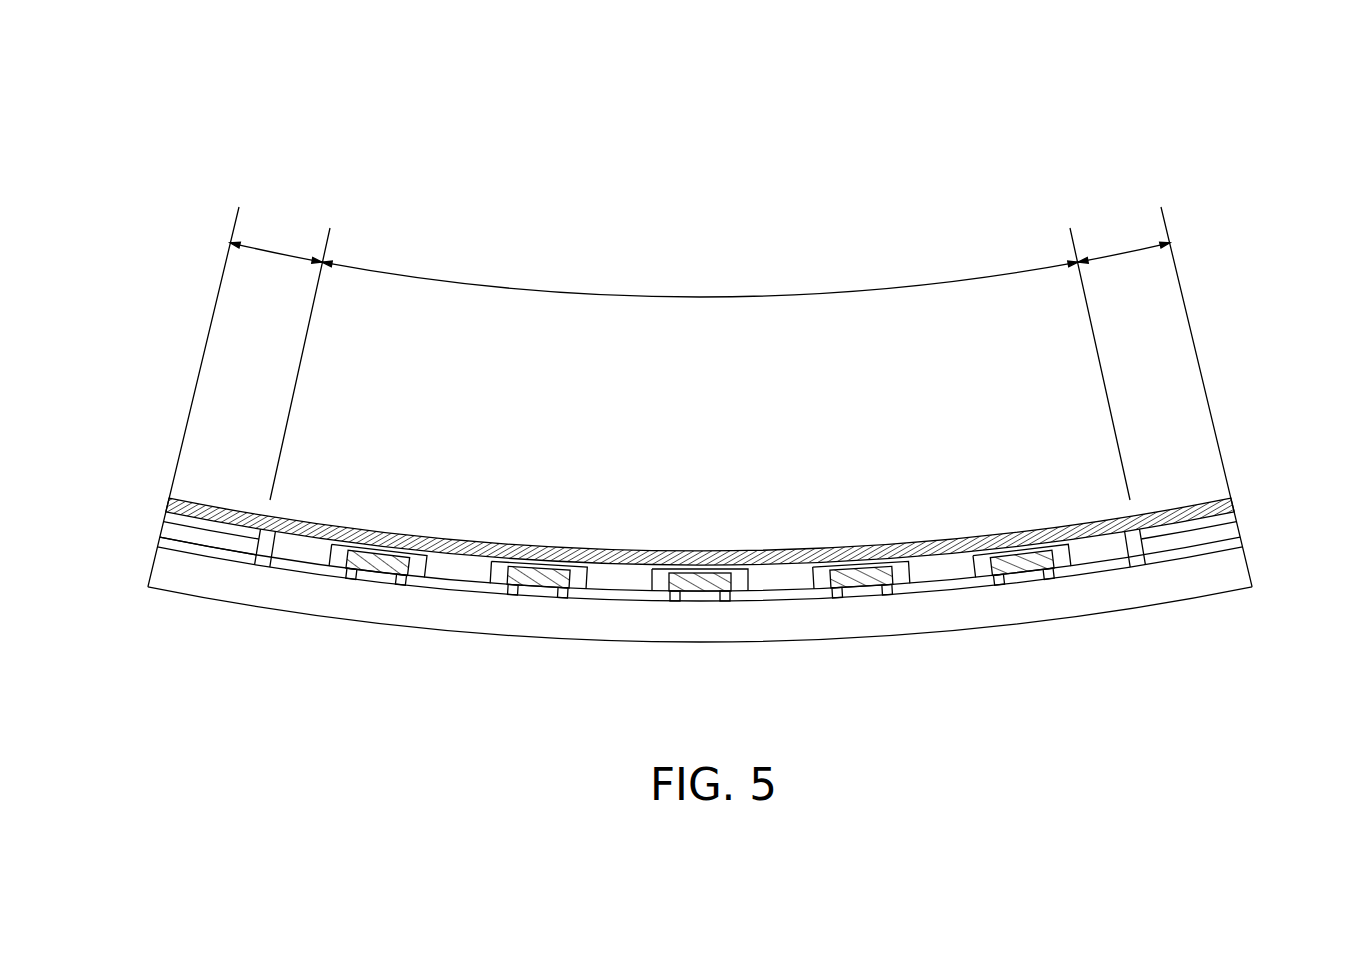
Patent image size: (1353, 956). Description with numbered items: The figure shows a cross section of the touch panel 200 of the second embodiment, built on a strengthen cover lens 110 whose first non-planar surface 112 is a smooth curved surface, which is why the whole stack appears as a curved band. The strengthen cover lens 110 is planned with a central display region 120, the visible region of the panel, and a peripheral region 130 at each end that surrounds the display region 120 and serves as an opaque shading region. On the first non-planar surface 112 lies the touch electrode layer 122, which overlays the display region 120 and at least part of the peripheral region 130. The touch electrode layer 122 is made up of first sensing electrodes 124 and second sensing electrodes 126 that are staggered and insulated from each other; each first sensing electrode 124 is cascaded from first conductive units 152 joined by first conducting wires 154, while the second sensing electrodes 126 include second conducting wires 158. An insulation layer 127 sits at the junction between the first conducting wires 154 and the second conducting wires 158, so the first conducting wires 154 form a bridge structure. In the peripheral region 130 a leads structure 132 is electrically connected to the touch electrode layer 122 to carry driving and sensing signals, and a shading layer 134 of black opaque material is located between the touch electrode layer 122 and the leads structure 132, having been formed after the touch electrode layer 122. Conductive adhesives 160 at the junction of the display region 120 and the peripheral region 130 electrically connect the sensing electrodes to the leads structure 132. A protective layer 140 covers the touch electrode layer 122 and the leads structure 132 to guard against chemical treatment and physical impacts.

The touch panel 200 is at (1209, 132).
The strengthen cover lens 110 is at (1207, 590).
The first non-planar surface 112 is at (1215, 558).
The display region 120 is at (700, 279).
The touch electrode layer 122 is at (842, 430).
The first sensing electrodes 124 is at (663, 470).
The second sensing electrodes 126 is at (850, 470).
The insulation layer 127 is at (374, 550).
The peripheral region 130 is at (700, 358).
The leads structure 132 is at (222, 530).
The shading layer 134 is at (162, 523).
The protective layer 140 is at (1086, 521).
The first conductive units 152 is at (612, 580).
The first conducting wires 154 is at (398, 532).
The second conducting wires 158 is at (860, 550).
The conductive adhesives 160 is at (272, 528).